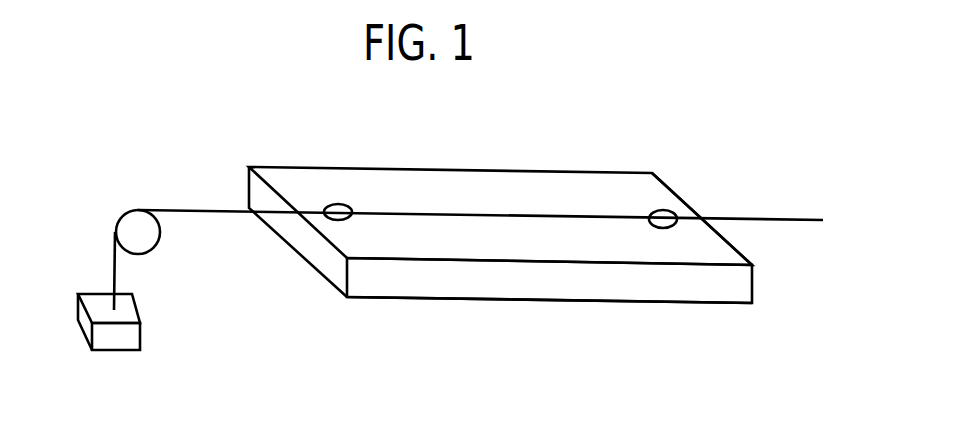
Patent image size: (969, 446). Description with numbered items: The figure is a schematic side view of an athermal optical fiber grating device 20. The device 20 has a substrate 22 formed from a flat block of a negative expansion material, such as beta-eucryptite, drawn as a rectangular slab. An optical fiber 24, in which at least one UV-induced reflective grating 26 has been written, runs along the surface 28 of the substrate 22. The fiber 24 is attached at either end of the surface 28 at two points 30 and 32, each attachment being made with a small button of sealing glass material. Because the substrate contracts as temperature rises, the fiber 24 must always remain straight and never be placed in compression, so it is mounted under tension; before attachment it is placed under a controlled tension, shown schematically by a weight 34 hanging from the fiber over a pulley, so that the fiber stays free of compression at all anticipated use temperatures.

The athermal optical fiber grating device 20 is at (469, 305).
The substrate 22 is at (692, 293).
The optical fiber 24 is at (190, 209).
The UV-induced reflective grating 26 is at (522, 217).
The surface 28 is at (710, 243).
The attachment point 30 is at (665, 214).
The attachment point 32 is at (340, 205).
The weight 34 is at (130, 335).